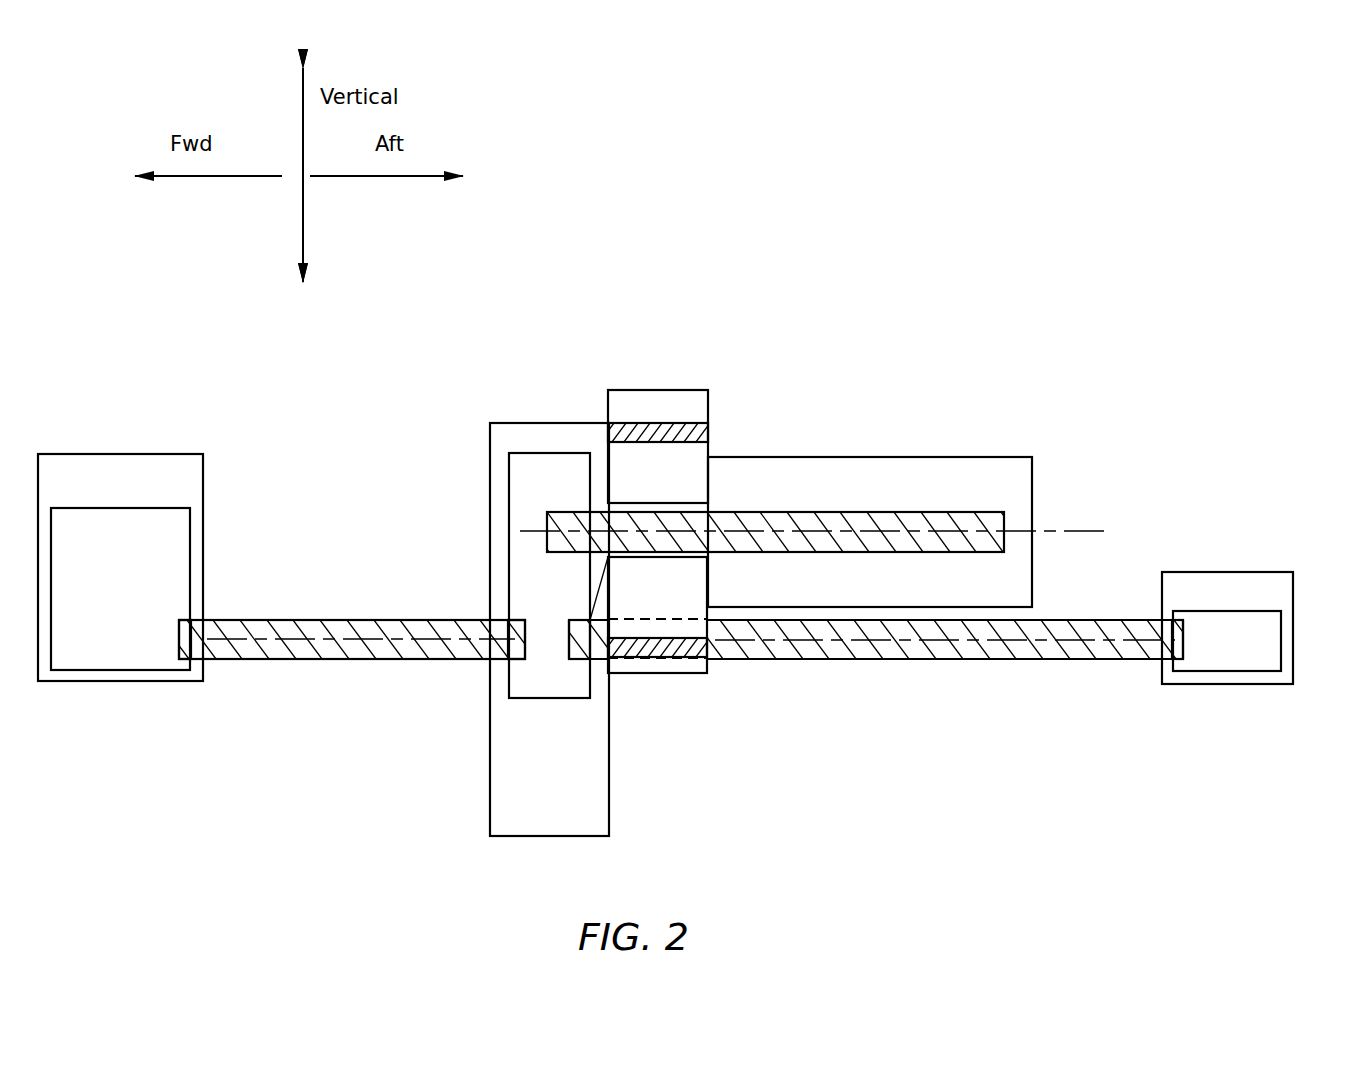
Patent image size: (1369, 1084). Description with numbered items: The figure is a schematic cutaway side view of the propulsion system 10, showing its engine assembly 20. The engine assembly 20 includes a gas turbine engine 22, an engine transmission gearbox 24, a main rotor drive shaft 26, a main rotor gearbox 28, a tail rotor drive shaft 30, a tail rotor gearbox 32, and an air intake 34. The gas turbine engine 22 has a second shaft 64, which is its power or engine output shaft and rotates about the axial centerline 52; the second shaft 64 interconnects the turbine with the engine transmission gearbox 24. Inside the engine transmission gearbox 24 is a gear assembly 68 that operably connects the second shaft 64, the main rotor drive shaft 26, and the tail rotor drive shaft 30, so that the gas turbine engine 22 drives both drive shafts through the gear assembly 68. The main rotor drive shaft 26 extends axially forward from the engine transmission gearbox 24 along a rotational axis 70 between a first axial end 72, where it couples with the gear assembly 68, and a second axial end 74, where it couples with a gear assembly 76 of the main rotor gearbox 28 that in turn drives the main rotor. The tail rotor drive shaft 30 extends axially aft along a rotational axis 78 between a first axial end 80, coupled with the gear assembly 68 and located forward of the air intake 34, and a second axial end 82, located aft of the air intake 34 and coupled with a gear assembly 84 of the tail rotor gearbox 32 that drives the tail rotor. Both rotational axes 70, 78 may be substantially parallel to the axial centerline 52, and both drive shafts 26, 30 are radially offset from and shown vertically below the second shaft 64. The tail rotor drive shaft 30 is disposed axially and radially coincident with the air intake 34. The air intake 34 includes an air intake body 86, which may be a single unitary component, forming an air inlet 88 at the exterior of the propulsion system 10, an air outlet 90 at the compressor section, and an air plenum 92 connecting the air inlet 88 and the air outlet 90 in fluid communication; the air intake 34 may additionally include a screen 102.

The propulsion system 10 is at (935, 303).
The engine assembly 20 is at (696, 466).
The gas turbine engine 22 is at (1032, 477).
The engine transmission gearbox 24 is at (490, 470).
The main rotor drive shaft 26 is at (323, 650).
The main rotor gearbox 28 is at (208, 470).
The tail rotor drive shaft 30 is at (907, 650).
The tail rotor gearbox 32 is at (1295, 590).
The air intake 34 is at (708, 402).
The axial centerline 52 is at (1068, 530).
The second shaft 64 is at (967, 523).
The gear assembly 68 is at (508, 593).
The rotational axis 70 is at (422, 640).
The first axial end 72 is at (530, 643).
The second axial end 74 is at (178, 648).
The gear assembly 76 is at (191, 548).
The rotational axis 78 is at (770, 640).
The first axial end 80 is at (567, 643).
The second axial end 82 is at (1190, 650).
The gear assembly 84 is at (1282, 645).
The air intake body 86 is at (708, 447).
The air inlet 88 is at (650, 388).
The air outlet 90 is at (708, 480).
The air plenum 92 is at (640, 470).
The screen 102 is at (638, 433).